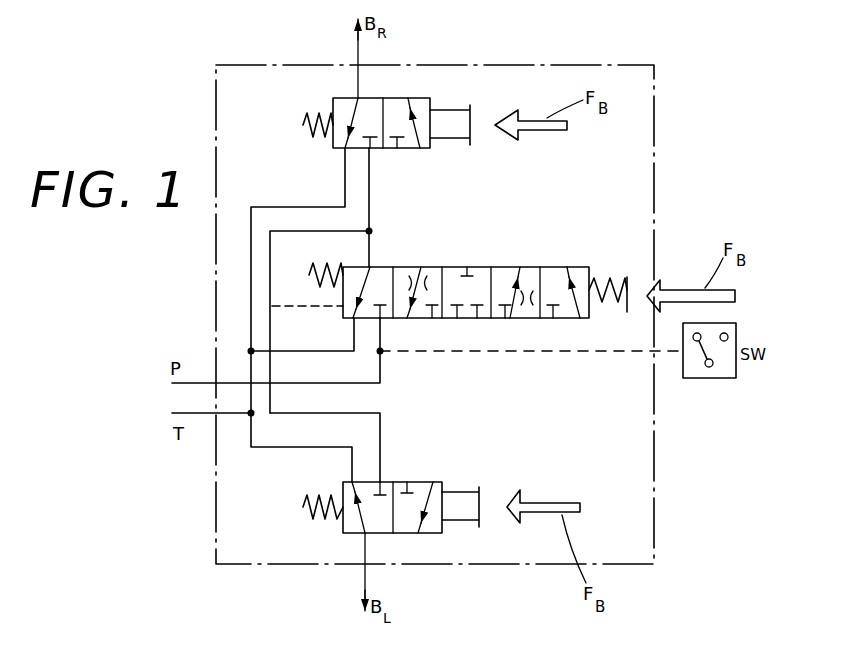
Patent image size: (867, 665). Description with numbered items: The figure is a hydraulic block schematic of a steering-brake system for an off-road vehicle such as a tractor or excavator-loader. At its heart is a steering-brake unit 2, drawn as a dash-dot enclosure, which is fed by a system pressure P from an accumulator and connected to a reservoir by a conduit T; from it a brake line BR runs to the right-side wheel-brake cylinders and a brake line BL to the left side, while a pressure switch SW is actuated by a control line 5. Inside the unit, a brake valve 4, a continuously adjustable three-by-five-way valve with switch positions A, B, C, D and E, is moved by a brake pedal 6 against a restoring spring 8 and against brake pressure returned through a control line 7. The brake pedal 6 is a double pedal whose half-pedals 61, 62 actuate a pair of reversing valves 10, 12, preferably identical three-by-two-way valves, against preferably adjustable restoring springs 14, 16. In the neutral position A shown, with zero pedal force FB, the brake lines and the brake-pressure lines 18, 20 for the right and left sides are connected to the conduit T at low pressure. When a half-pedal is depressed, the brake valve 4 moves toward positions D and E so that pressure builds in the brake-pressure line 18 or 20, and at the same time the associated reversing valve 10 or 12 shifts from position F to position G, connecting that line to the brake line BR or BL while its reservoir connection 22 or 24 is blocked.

The steering-brake unit 2 is at (607, 65).
The brake valve 4 is at (537, 265).
The control line 5 is at (517, 351).
The brake pedal 6 is at (615, 280).
The half-pedal 61 is at (453, 139).
The half-pedal 62 is at (462, 492).
The control line 7 is at (295, 306).
The restoring spring 8 is at (309, 275).
The reversing valve 10 is at (399, 96).
The reversing valve 12 is at (407, 537).
The restoring spring 14 is at (303, 125).
The restoring spring 16 is at (303, 504).
The brake-pressure line 18 is at (371, 198).
The brake-pressure line 20 is at (381, 440).
The reservoir connection 22 is at (343, 175).
The reservoir connection 24 is at (278, 448).